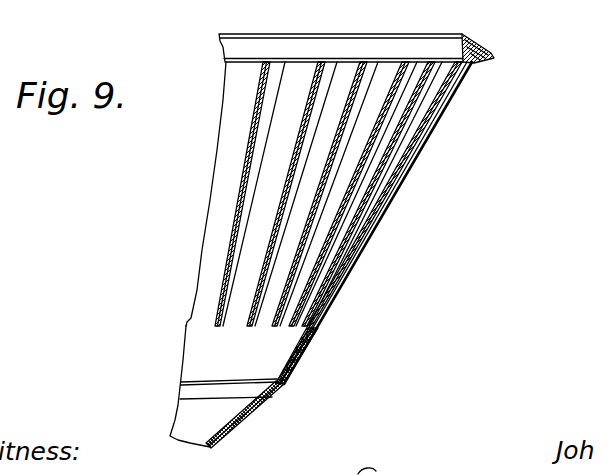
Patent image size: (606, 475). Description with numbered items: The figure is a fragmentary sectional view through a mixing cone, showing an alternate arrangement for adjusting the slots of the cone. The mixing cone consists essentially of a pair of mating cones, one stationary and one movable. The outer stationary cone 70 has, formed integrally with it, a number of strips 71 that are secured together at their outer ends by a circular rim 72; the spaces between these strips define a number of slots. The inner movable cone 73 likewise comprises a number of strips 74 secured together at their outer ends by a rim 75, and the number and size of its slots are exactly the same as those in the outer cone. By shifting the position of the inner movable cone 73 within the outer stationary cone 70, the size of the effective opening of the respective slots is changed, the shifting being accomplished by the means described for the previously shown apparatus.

The outer stationary cone 70 is at (281, 391).
The strips 71 is at (421, 149).
The circular rim 72 is at (476, 62).
The inner movable cone 73 is at (197, 342).
The strips 74 is at (227, 140).
The rim 75 is at (250, 44).